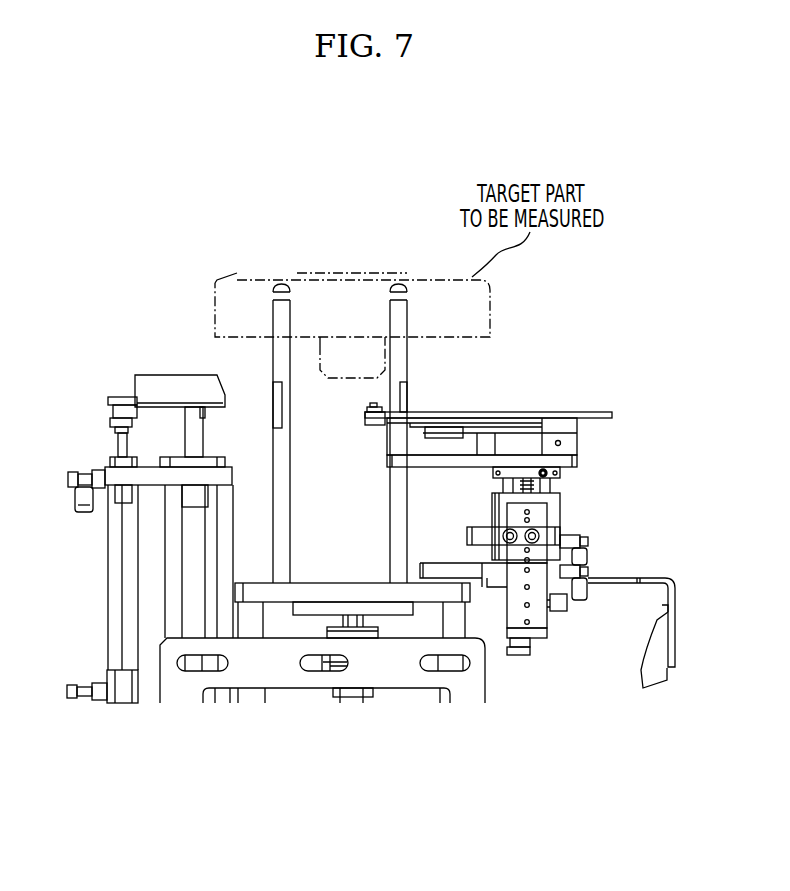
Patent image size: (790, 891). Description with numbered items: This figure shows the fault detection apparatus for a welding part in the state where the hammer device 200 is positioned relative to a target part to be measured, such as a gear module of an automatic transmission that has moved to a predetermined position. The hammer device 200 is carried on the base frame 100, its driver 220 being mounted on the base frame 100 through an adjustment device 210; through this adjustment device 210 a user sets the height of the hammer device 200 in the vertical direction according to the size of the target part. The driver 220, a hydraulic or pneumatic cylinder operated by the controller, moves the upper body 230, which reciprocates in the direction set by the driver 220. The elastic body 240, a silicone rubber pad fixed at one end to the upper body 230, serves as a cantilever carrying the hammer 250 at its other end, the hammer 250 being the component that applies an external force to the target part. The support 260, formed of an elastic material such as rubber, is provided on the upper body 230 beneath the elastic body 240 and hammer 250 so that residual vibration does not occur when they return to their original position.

The base frame 100 is at (503, 607).
The hammer device 200 is at (465, 444).
The adjustment device 210 is at (564, 619).
The driver 220 is at (567, 502).
The upper body 230 is at (438, 468).
The elastic body 240 is at (523, 430).
The hammer 250 is at (370, 405).
The support 260 is at (485, 442).